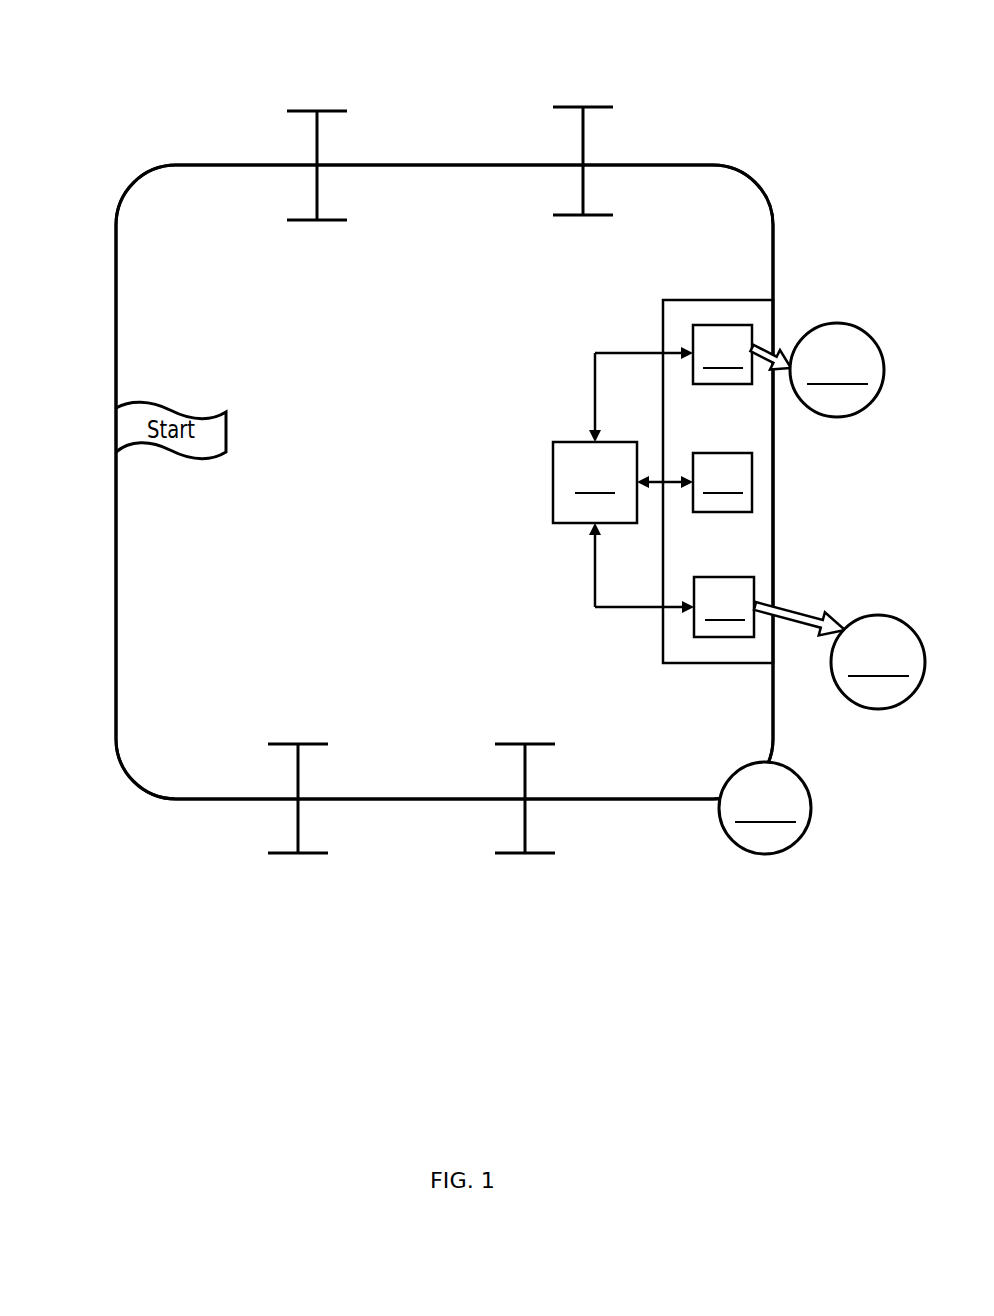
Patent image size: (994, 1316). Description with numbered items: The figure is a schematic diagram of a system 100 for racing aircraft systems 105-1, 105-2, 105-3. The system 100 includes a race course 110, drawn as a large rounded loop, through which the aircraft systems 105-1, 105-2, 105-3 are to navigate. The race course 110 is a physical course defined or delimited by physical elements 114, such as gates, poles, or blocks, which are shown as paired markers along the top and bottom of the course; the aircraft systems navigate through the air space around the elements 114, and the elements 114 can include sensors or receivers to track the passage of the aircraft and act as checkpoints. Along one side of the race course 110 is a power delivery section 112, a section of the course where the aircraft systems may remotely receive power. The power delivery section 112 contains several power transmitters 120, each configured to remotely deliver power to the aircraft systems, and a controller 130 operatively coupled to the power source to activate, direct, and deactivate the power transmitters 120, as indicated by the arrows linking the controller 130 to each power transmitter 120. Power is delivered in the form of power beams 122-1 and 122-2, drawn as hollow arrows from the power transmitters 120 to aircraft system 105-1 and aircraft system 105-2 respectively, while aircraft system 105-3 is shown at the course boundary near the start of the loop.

The system 100 is at (122, 80).
The race course 110 is at (116, 250).
The power delivery section 112 is at (758, 430).
The physical elements 114 is at (298, 826).
The power transmitter 120 is at (723, 481).
The controller 130 is at (595, 482).
The power beam 122-1 is at (796, 612).
The power beam 122-2 is at (784, 358).
The aircraft system 105-1 is at (878, 662).
The aircraft system 105-2 is at (837, 370).
The aircraft system 105-3 is at (765, 808).